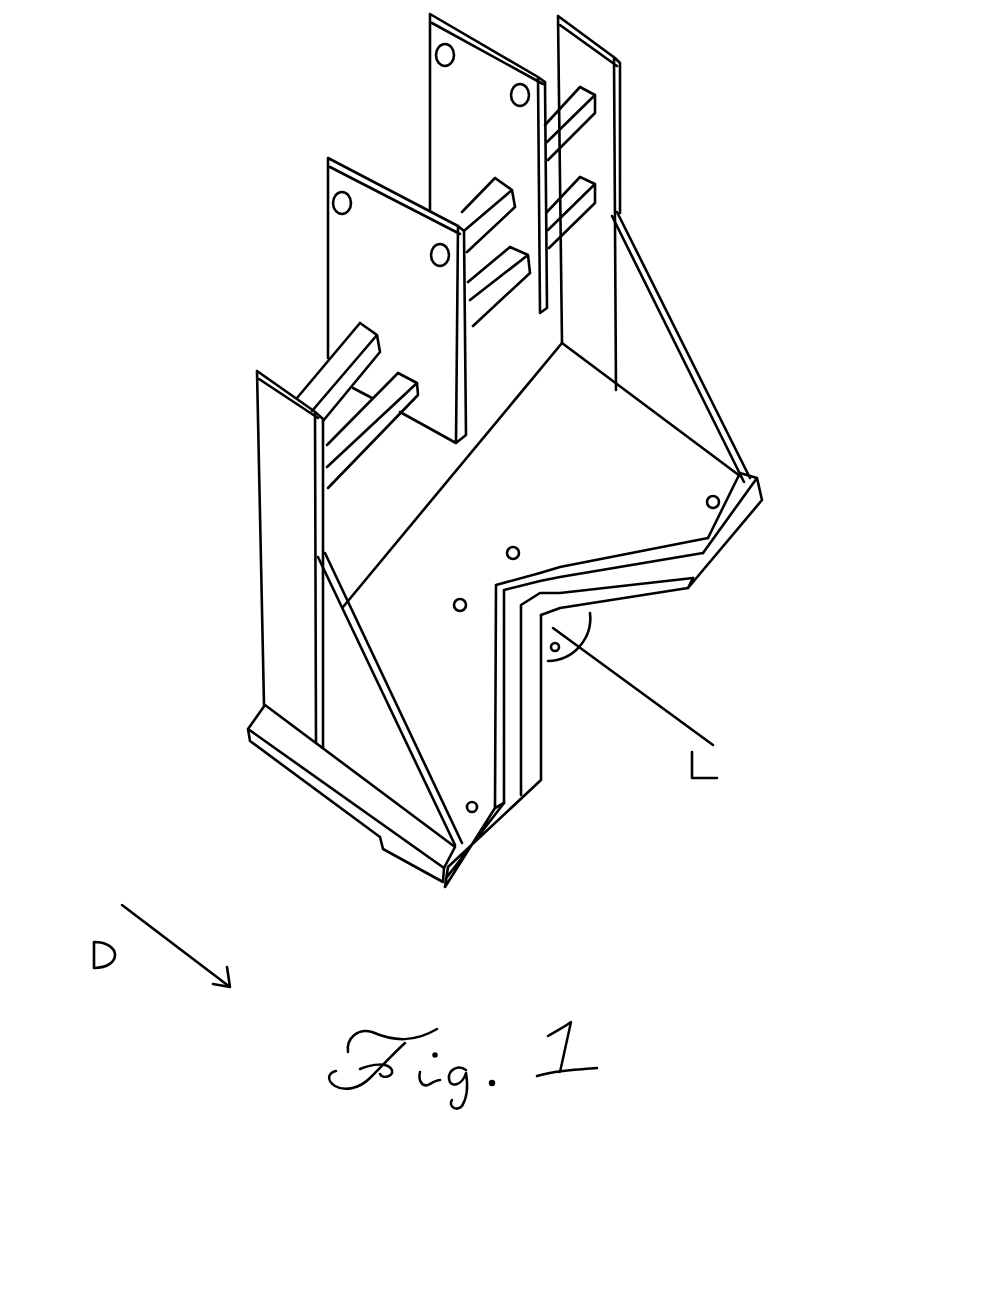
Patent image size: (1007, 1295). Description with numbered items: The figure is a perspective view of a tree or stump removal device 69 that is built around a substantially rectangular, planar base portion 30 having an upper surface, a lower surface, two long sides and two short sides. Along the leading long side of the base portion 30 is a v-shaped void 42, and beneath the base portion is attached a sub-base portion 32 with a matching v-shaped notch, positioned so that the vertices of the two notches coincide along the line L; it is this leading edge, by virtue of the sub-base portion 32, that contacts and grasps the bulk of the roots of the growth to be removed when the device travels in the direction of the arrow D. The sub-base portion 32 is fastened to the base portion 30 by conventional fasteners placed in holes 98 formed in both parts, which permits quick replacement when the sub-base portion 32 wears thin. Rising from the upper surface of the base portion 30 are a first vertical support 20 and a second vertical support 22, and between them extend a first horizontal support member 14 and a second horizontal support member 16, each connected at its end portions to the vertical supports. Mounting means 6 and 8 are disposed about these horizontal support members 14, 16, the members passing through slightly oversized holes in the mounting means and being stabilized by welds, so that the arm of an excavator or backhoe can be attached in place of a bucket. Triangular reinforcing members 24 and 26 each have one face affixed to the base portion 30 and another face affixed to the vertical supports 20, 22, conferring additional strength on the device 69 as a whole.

The mounting means 6 is at (453, 118).
The mounting means 8 is at (355, 250).
The first horizontal support member 14 is at (728, 107).
The second horizontal support member 16 is at (122, 498).
The first vertical support 20 is at (285, 601).
The second vertical support 22 is at (588, 72).
The reinforcing member 24 is at (664, 368).
The reinforcing member 26 is at (368, 715).
The base portion 30 is at (628, 503).
The sub-base portion 32 is at (547, 667).
The v-shaped void 42 is at (618, 643).
The device 69 is at (773, 737).
The holes 98 is at (856, 400).